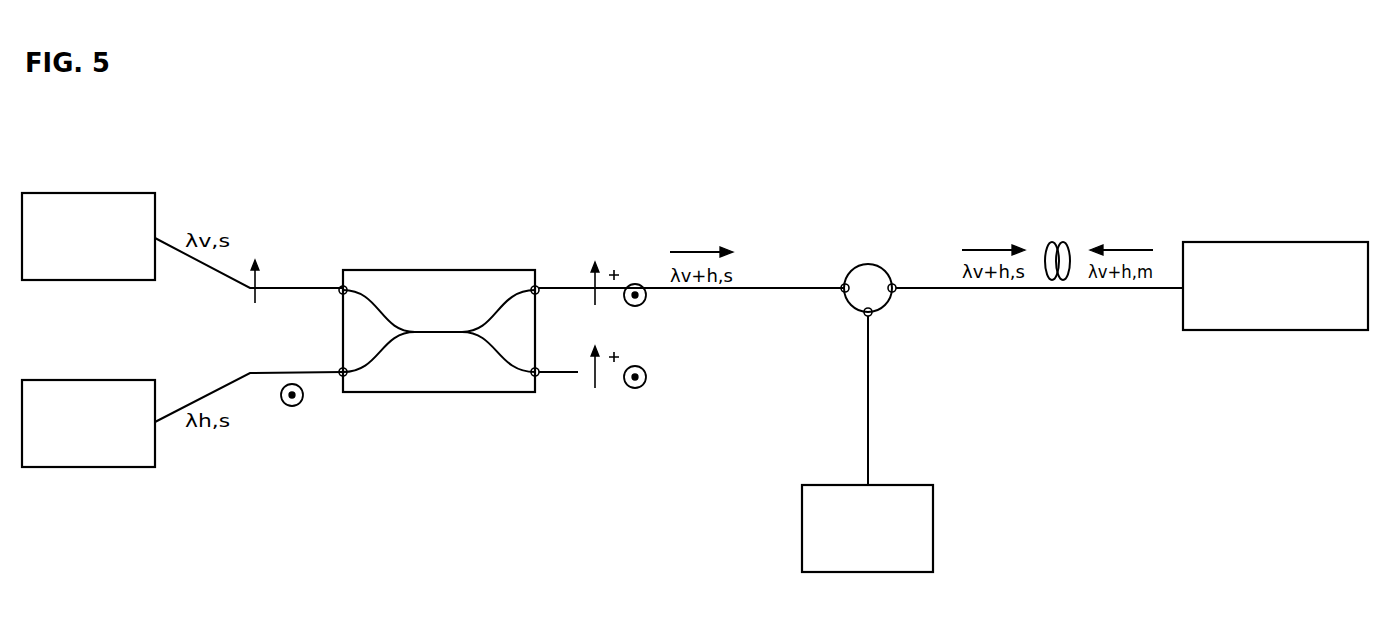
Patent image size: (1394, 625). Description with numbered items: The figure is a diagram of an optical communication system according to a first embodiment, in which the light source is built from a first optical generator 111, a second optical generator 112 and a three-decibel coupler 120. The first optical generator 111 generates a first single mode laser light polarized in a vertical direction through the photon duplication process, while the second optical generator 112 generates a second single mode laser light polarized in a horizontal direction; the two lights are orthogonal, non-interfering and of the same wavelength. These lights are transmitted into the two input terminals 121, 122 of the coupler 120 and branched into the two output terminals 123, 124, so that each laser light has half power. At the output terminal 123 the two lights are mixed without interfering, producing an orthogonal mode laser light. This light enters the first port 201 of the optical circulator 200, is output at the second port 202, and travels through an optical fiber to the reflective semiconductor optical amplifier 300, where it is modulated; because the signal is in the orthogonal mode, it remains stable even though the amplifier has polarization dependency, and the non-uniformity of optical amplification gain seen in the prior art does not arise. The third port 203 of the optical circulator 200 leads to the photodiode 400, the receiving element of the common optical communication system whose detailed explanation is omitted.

The first optical generator 111 is at (88, 193).
The second optical generator 112 is at (88, 380).
The 3 dB coupler 120 is at (440, 270).
The input terminal 121 is at (343, 285).
The input terminal 122 is at (343, 377).
The output terminal 123 is at (536, 285).
The output terminal 124 is at (536, 377).
The optical circulator 200 is at (868, 263).
The first port 201 is at (843, 283).
The second port 202 is at (894, 283).
The third port 203 is at (865, 317).
The reflective semiconductor optical amplifier 300 is at (1276, 242).
The photodiode 400 is at (903, 485).